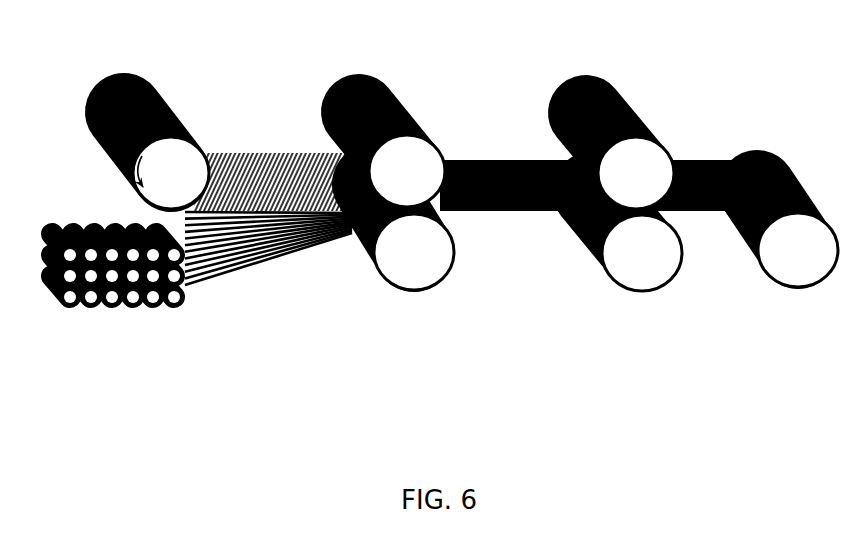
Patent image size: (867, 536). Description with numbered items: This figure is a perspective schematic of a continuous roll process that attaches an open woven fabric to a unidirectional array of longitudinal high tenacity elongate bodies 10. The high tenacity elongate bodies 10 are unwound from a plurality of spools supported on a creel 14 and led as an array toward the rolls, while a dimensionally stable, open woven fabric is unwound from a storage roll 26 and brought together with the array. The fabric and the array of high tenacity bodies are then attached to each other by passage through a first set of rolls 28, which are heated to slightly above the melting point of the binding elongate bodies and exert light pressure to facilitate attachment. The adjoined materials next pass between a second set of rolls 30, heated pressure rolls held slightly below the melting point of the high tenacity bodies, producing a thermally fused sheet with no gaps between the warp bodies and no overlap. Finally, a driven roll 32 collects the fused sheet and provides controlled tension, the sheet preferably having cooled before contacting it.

The high tenacity elongate bodies 10 is at (272, 270).
The creel 14 is at (136, 316).
The storage roll 26 is at (175, 160).
The first set of rolls 28 is at (405, 166).
The second set of rolls 30 is at (642, 173).
The driven roll 32 is at (790, 248).